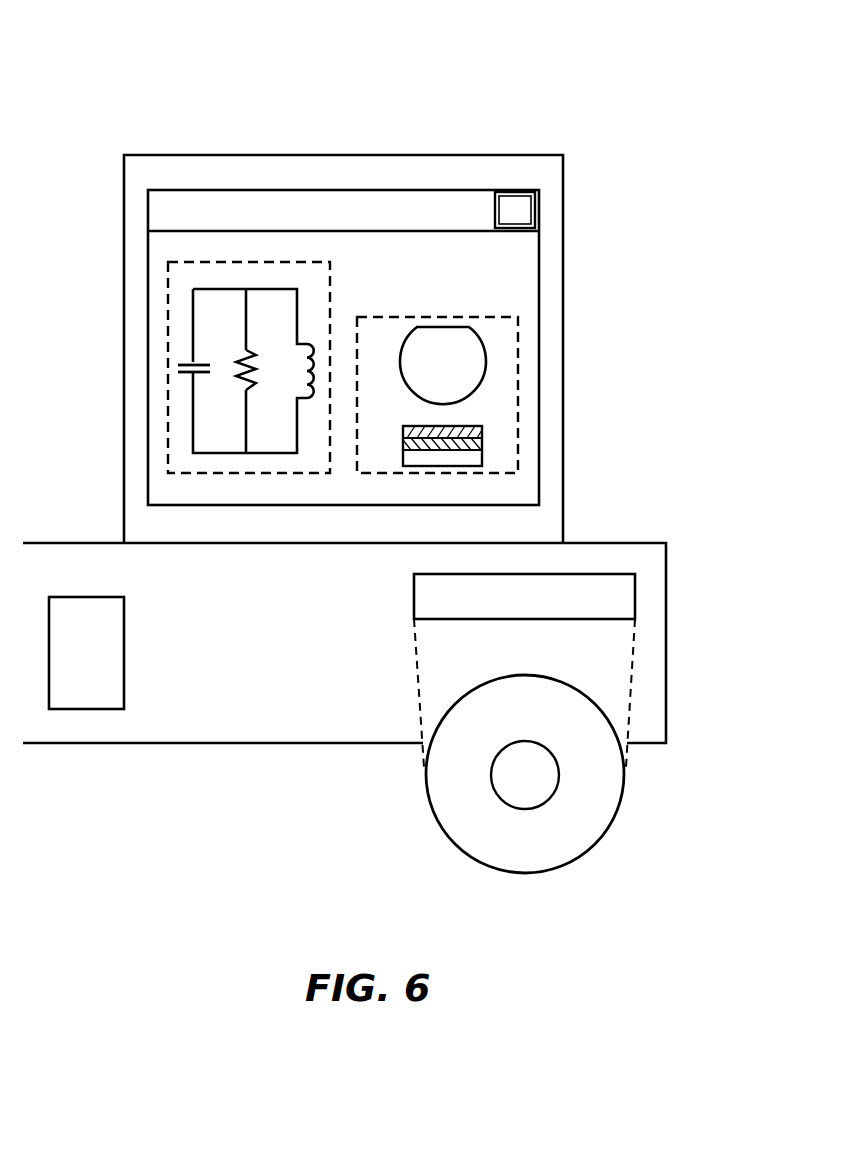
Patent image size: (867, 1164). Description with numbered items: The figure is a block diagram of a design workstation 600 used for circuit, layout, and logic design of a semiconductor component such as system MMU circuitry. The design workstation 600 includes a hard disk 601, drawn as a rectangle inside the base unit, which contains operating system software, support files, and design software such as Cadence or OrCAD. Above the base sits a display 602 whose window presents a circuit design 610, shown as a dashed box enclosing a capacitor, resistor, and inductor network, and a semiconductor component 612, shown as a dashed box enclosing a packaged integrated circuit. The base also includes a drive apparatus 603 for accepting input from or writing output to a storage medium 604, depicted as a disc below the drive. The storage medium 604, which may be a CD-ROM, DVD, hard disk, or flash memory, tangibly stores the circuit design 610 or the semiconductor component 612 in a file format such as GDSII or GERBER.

The design workstation 600 is at (117, 71).
The hard disk 601 is at (125, 620).
The display 602 is at (500, 155).
The drive apparatus 603 is at (622, 573).
The storage medium 604 is at (522, 874).
The circuit design 610 is at (329, 282).
The semiconductor component 612 is at (450, 317).